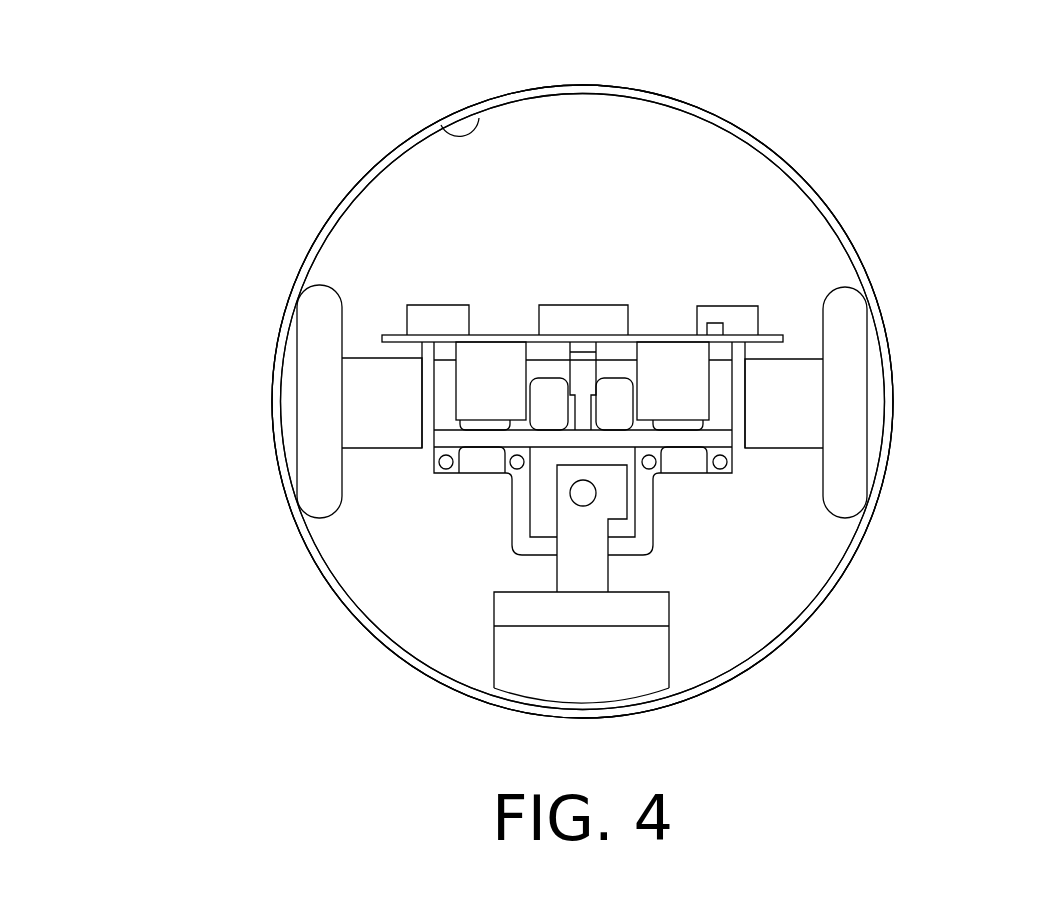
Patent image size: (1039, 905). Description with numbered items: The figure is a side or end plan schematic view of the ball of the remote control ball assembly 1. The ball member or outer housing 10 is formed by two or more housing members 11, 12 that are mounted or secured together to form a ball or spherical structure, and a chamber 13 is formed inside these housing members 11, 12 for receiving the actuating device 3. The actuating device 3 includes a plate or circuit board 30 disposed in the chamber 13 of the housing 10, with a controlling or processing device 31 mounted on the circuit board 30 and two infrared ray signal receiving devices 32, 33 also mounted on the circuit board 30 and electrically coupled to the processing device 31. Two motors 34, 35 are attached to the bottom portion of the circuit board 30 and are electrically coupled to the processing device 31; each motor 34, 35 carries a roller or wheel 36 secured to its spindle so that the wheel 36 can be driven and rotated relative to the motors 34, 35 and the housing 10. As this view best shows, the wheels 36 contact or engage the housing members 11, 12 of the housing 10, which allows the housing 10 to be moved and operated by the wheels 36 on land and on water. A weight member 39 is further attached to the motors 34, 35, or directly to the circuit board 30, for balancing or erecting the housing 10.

The remote control ball assembly 1 is at (958, 120).
The actuating device 3 is at (621, 190).
The outer housing 10 is at (703, 110).
The housing member 11 is at (815, 198).
The housing member 12 is at (803, 628).
The chamber 13 is at (482, 116).
The circuit board 30 is at (778, 335).
The processing device 31 is at (573, 315).
The signal receiving device 32 is at (727, 310).
The signal receiving device 33 is at (432, 312).
The motor 34 is at (805, 402).
The motor 35 is at (367, 395).
The wheel 36 is at (847, 433).
The weight member 39 is at (622, 677).